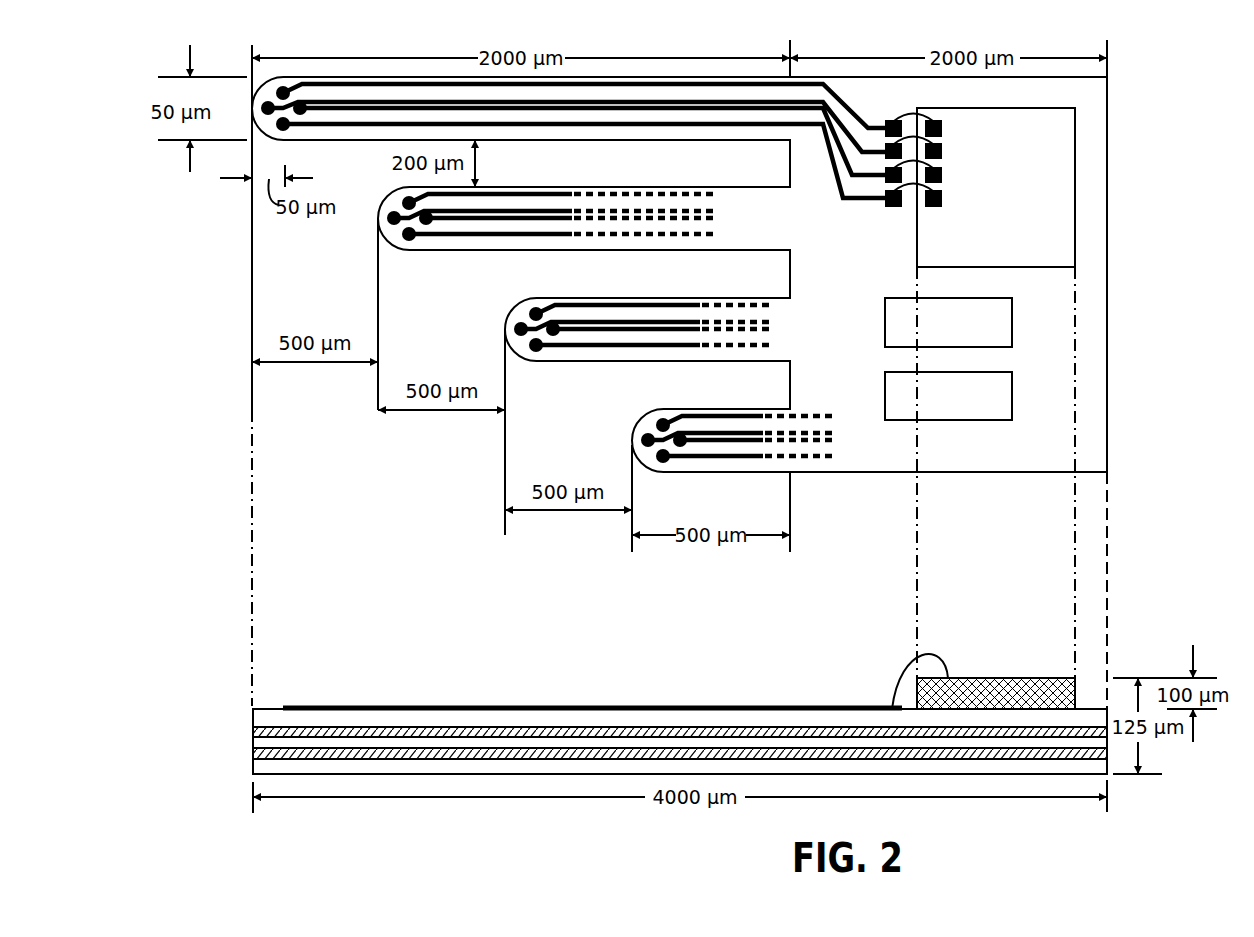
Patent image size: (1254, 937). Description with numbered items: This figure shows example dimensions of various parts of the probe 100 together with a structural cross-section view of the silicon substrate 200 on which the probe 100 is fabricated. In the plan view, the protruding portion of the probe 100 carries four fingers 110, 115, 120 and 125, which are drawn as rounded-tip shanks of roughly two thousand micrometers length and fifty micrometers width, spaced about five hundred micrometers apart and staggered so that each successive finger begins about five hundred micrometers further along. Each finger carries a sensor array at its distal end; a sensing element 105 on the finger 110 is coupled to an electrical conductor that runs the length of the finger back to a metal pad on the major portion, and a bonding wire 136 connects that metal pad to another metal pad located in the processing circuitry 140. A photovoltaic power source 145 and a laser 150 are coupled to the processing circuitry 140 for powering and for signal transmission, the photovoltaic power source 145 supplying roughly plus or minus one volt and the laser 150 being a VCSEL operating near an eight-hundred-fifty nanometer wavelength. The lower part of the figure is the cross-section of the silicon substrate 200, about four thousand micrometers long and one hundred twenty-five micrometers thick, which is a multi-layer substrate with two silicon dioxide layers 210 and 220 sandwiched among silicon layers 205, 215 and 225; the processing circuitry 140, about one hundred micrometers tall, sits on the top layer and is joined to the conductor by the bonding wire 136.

The probe 100 is at (1187, 108).
The sensing element 105 is at (283, 131).
The finger 110 is at (507, 141).
The finger 115 is at (575, 187).
The finger 120 is at (630, 298).
The finger 125 is at (697, 409).
The bonding wire 136 is at (909, 655).
The processing circuitry 140 is at (1066, 136).
The photovoltaic power source 145 is at (1012, 322).
The laser 150 is at (1012, 395).
The silicon substrate 200 is at (181, 713).
The silicon layer 205 is at (253, 716).
The silicon dioxide layer 210 is at (253, 728).
The silicon layer 215 is at (253, 740).
The silicon dioxide layer 220 is at (253, 752).
The silicon layer 225 is at (253, 766).